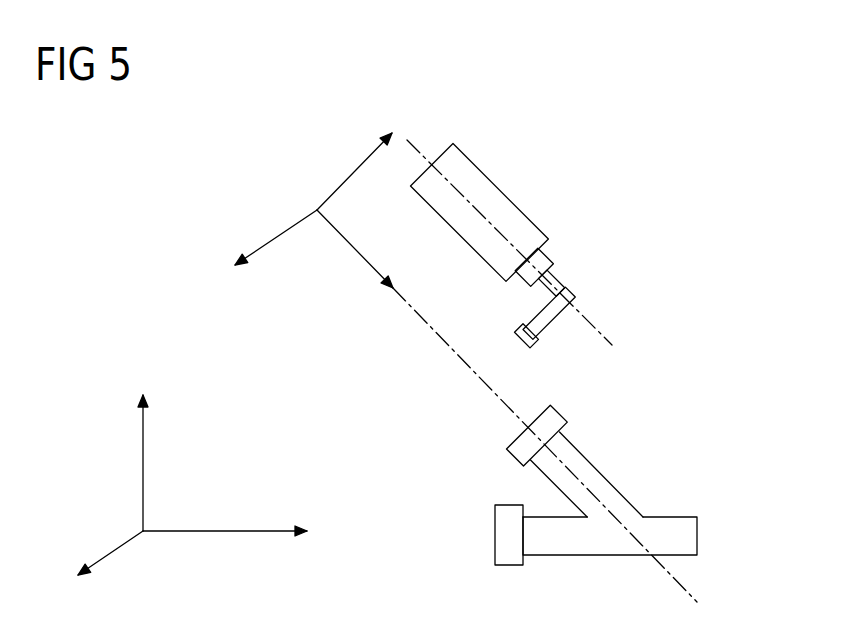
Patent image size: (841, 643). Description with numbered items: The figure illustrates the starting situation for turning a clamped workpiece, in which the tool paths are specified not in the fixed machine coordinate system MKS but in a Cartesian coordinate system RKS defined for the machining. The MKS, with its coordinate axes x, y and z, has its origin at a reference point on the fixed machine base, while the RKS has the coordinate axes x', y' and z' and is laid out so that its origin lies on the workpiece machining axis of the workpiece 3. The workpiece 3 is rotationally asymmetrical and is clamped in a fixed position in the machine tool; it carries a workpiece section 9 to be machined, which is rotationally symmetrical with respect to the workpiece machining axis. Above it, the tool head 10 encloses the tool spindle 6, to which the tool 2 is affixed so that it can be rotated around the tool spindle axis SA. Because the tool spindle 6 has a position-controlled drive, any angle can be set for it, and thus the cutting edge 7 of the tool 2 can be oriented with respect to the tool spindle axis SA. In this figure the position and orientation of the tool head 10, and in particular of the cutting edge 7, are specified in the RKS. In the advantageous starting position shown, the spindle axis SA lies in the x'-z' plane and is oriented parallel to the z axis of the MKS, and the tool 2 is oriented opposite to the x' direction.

The tool 2 is at (567, 291).
The workpiece 3 is at (667, 525).
The tool spindle 6 is at (548, 252).
The cutting edge 7 is at (520, 335).
The workpiece section 9 is at (553, 418).
The tool head 10 is at (470, 161).
The tool spindle axis SA is at (606, 334).
The Cartesian RKS coordinate system RKS is at (297, 195).
The MKS coordinate system MKS is at (165, 520).